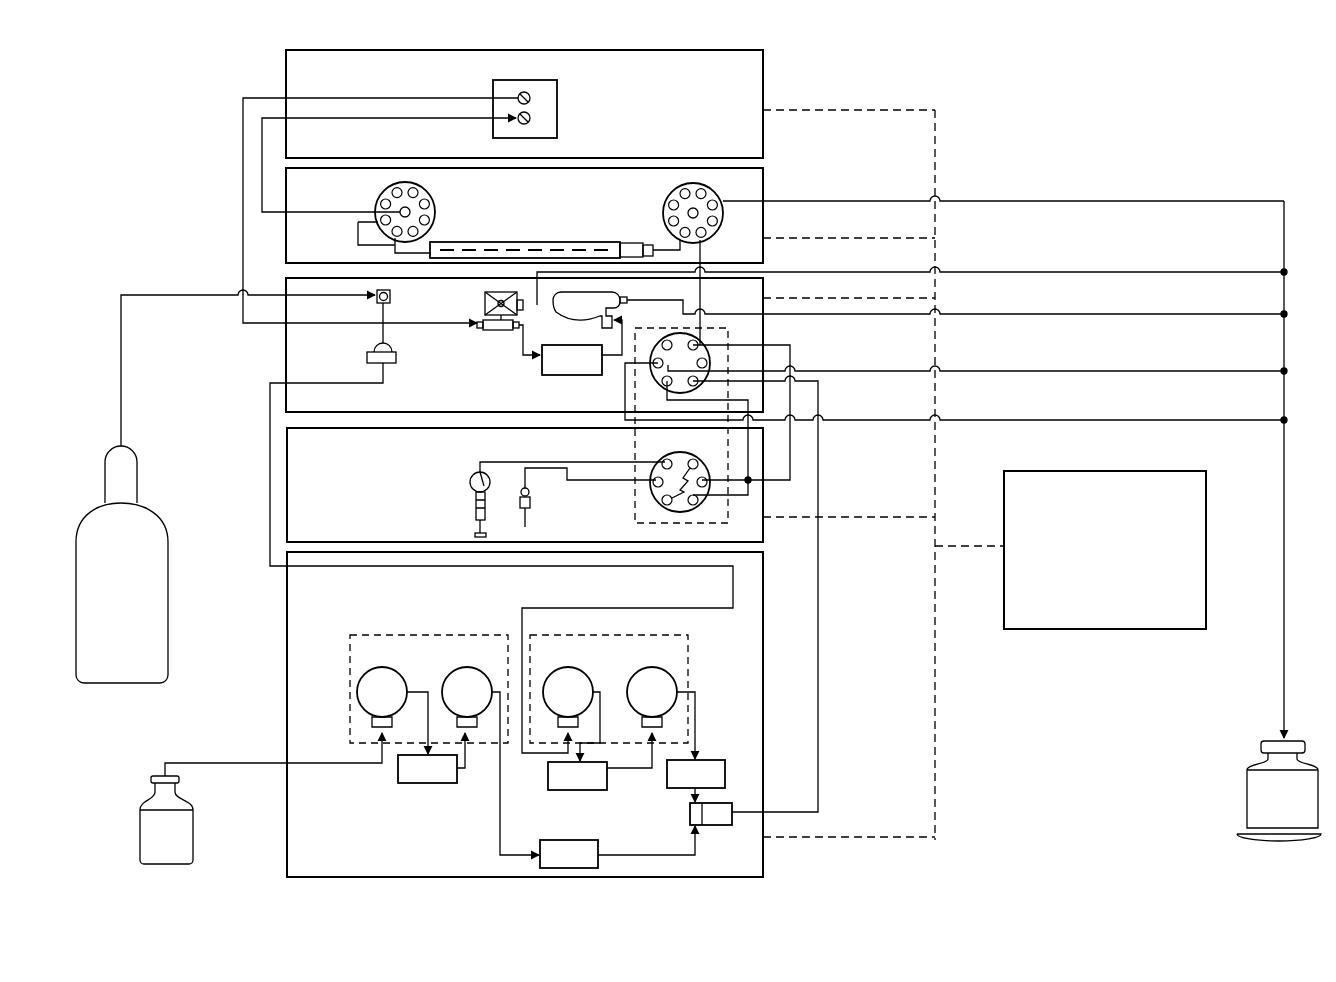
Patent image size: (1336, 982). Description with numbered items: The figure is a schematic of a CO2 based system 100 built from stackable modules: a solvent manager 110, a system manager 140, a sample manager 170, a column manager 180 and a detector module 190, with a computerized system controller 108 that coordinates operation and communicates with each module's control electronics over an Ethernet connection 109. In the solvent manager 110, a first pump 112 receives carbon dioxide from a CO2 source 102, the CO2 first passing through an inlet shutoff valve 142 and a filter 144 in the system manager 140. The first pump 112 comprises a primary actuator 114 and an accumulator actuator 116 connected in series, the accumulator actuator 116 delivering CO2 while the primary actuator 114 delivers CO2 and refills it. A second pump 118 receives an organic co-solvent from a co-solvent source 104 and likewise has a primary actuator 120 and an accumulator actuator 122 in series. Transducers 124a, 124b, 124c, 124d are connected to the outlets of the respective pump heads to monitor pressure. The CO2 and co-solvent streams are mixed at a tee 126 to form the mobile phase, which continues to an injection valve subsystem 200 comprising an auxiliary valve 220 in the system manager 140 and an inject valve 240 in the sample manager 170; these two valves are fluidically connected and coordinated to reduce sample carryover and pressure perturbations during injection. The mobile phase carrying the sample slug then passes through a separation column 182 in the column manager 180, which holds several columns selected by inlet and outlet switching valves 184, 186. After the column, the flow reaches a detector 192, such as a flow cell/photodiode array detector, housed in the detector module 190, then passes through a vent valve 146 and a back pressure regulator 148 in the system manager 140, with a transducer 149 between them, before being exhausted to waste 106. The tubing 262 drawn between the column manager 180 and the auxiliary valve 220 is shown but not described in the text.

The CO2 based system 100 is at (176, 80).
The CO2 source 102 is at (100, 602).
The co-solvent source 104 is at (147, 850).
The waste 106 is at (1263, 807).
The system controller 108 is at (1086, 596).
The Ethernet connection 109 is at (942, 163).
The solvent manager 110 is at (356, 856).
The first pump 112 is at (688, 658).
The primary actuator 114 is at (551, 702).
The accumulator actuator 116 is at (635, 702).
The second pump 118 is at (437, 635).
The primary actuator 120 is at (365, 702).
The accumulator actuator 122 is at (450, 702).
The transducer 124a is at (548, 781).
The transducer 124b is at (667, 777).
The transducer 124c is at (398, 781).
The transducer 124d is at (590, 840).
The tee 126 is at (713, 827).
The system manager 140 is at (336, 408).
The inlet shutoff valve 142 is at (377, 301).
The filter 144 is at (367, 358).
The vent valve 146 is at (485, 307).
The back pressure regulator 148 is at (596, 316).
The transducer 149 is at (542, 365).
The sample manager 170 is at (301, 536).
The column manager 180 is at (528, 228).
The separation column 182 is at (520, 242).
The inlet switching valve 184 is at (662, 216).
The outlet switching valve 186 is at (377, 193).
The detector module 190 is at (696, 101).
The detector 192 is at (502, 80).
The injection valve subsystem 200 is at (635, 493).
The auxiliary valve 220 is at (685, 335).
The inject valve 240 is at (695, 458).
The tubing 262 is at (700, 292).